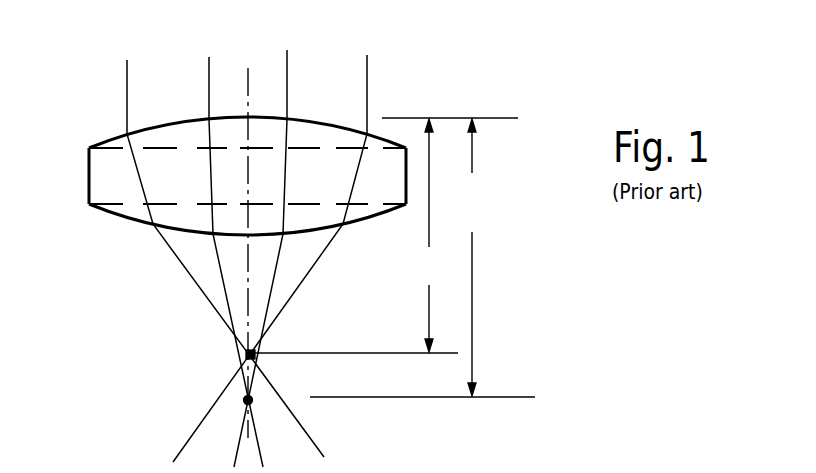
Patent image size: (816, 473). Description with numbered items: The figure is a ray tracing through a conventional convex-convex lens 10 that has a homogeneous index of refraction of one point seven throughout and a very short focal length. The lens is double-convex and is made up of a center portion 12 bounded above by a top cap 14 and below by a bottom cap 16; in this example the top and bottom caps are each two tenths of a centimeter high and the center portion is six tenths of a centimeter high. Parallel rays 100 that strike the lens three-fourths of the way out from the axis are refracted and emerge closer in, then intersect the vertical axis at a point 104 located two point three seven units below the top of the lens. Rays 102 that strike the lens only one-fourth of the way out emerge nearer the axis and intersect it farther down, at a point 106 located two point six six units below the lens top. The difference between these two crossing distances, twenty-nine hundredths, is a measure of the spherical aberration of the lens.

The convex-convex lens 10 is at (408, 78).
The center portion 12 is at (110, 182).
The top cap 14 is at (182, 131).
The bottom cap 16 is at (160, 218).
The rays 100 is at (285, 67).
The rays 102 is at (126, 88).
The point 104 is at (245, 400).
The point 106 is at (254, 352).